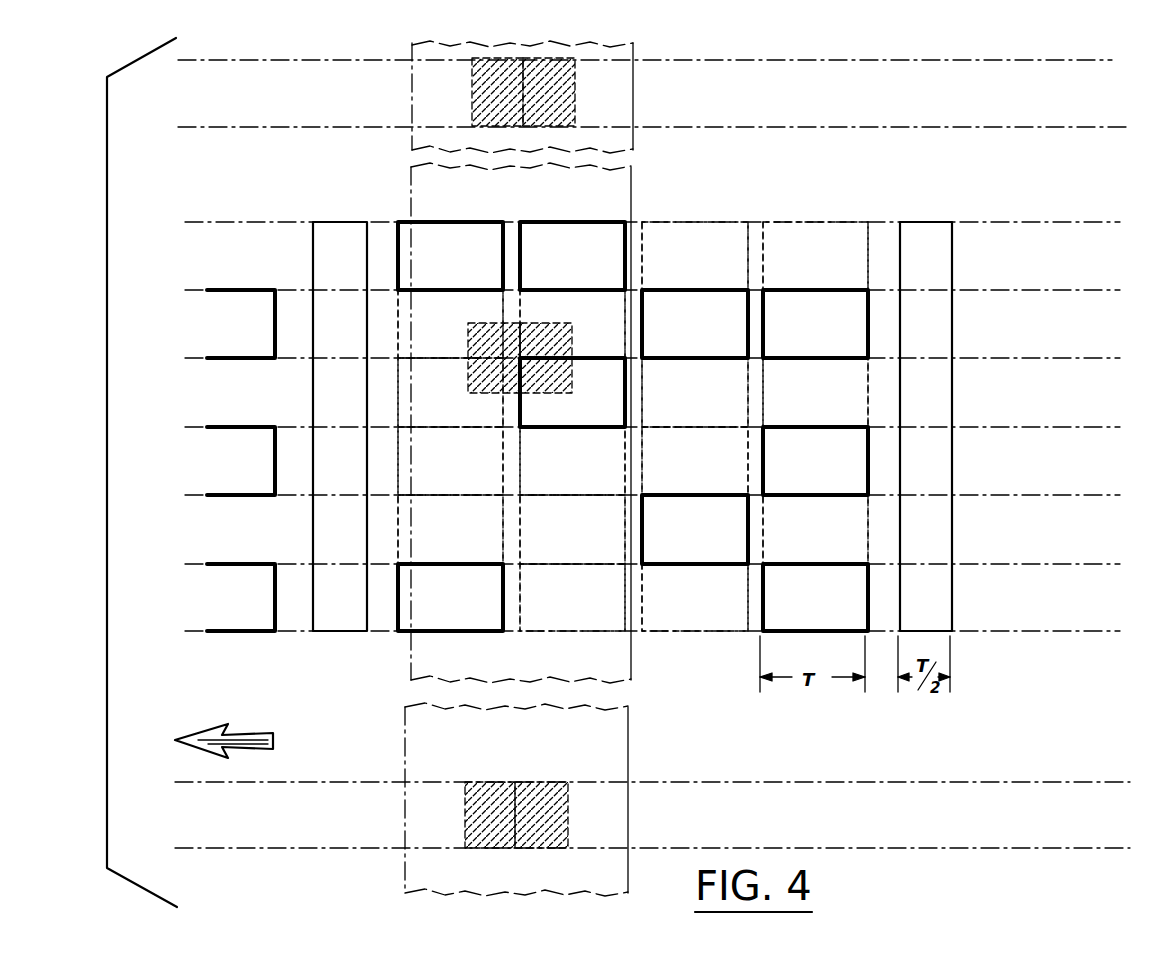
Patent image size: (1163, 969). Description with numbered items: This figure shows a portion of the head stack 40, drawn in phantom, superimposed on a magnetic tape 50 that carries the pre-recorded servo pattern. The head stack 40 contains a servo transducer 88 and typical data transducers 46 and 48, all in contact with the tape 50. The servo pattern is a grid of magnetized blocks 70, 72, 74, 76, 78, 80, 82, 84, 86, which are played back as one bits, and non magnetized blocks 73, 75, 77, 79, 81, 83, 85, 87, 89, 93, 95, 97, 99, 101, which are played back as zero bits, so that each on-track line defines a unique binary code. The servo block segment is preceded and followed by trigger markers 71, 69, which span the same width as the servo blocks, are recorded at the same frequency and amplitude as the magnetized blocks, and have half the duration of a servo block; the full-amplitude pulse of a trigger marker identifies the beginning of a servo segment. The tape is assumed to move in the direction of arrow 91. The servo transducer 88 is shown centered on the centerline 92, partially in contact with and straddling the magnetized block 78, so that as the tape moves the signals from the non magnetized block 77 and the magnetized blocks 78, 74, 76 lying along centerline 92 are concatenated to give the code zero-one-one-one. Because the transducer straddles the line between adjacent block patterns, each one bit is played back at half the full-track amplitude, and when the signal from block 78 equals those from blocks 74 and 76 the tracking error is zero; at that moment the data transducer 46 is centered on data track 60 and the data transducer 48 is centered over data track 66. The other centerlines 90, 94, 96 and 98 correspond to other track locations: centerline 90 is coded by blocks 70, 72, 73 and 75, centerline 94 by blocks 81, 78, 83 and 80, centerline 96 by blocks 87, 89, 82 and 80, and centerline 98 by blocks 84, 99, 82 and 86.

The head stack 40 is at (633, 193).
The data transducer 46 is at (472, 106).
The data transducer 48 is at (575, 782).
The tape 50 is at (1057, 182).
The data track 60 is at (754, 93).
The data track 66 is at (780, 813).
The trigger marker 69 is at (925, 223).
The trigger marker 71 is at (333, 221).
The magnetized block 70 is at (432, 273).
The magnetized block 72 is at (554, 273).
The non magnetized block 73 is at (677, 273).
The magnetized block 74 is at (677, 341).
The non magnetized block 75 is at (797, 273).
The magnetized block 76 is at (797, 341).
The non magnetized block 77 is at (422, 326).
The magnetized block 78 is at (577, 420).
The non magnetized block 79 is at (577, 330).
The magnetized block 80 is at (797, 478).
The non magnetized block 81 is at (422, 417).
The magnetized block 82 is at (677, 547).
The non magnetized block 83 is at (677, 409).
The magnetized block 84 is at (432, 615).
The non magnetized block 85 is at (797, 409).
The magnetized block 86 is at (797, 615).
The non magnetized block 87 is at (432, 478).
The servo transducer 88 is at (468, 360).
The non magnetized block 89 is at (554, 478).
The centerline 90 is at (1065, 290).
The arrow 91 is at (232, 740).
The centerline 92 is at (1060, 358).
The non magnetized block 93 is at (432, 547).
The centerline 94 is at (1060, 427).
The non magnetized block 95 is at (554, 547).
The centerline 96 is at (1060, 495).
The non magnetized block 97 is at (797, 547).
The centerline 98 is at (1060, 564).
The non magnetized block 99 is at (554, 615).
The non magnetized block 101 is at (672, 615).